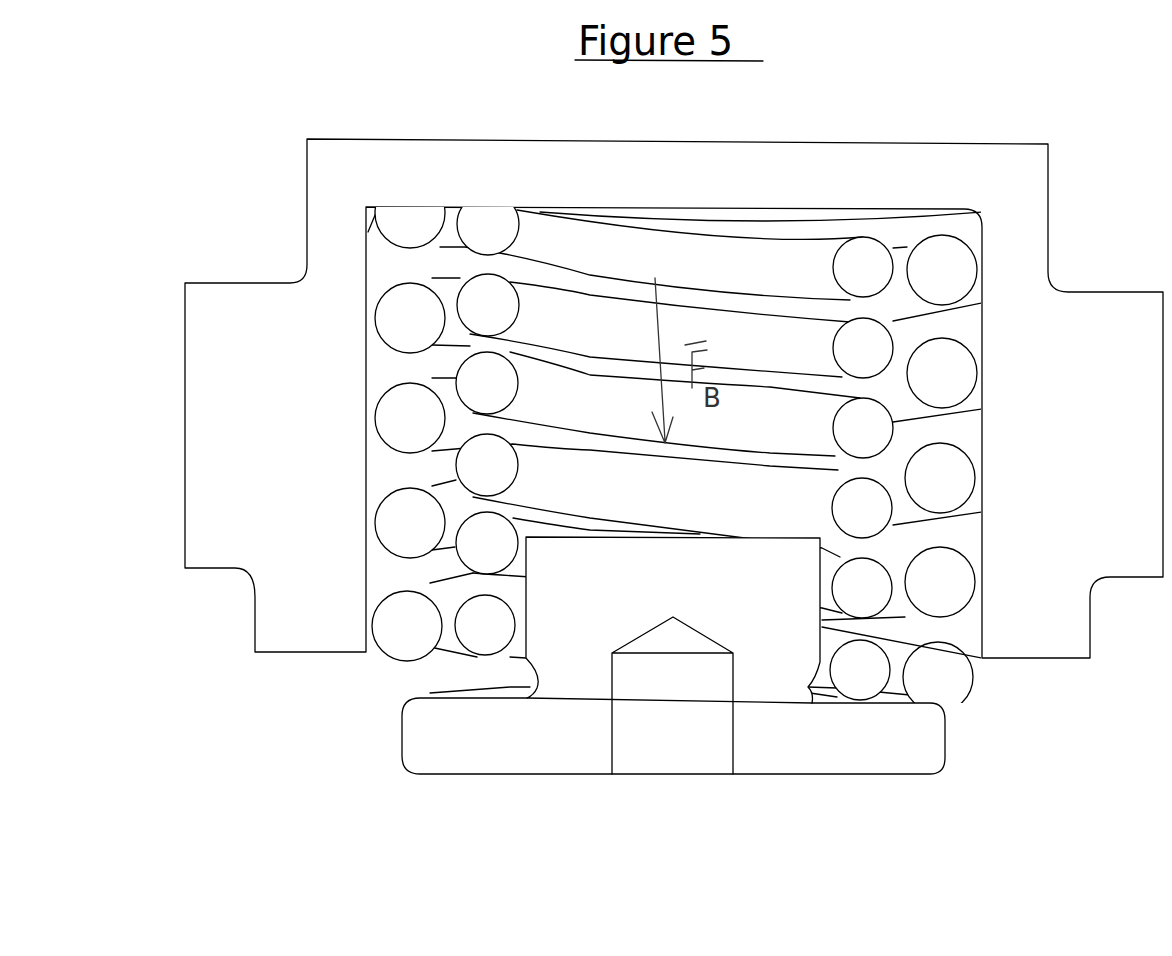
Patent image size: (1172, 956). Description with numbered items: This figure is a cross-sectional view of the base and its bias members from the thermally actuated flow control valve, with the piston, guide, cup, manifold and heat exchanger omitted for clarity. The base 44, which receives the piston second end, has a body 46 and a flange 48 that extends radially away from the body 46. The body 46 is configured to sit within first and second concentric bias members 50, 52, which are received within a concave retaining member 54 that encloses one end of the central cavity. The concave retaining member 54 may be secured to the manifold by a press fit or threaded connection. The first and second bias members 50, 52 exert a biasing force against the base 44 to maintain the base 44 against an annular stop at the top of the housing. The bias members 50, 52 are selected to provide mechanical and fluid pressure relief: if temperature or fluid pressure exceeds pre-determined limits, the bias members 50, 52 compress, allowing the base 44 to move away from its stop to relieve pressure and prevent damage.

The base 44 is at (671, 717).
The body 46 is at (537, 602).
The flange 48 is at (498, 762).
The first bias member 50 is at (753, 381).
The second bias member 52 is at (945, 252).
The concave retaining member 54 is at (257, 295).